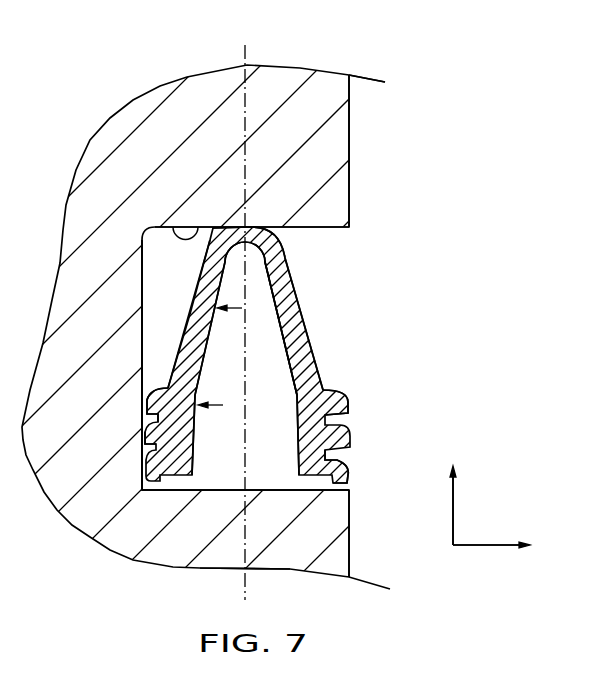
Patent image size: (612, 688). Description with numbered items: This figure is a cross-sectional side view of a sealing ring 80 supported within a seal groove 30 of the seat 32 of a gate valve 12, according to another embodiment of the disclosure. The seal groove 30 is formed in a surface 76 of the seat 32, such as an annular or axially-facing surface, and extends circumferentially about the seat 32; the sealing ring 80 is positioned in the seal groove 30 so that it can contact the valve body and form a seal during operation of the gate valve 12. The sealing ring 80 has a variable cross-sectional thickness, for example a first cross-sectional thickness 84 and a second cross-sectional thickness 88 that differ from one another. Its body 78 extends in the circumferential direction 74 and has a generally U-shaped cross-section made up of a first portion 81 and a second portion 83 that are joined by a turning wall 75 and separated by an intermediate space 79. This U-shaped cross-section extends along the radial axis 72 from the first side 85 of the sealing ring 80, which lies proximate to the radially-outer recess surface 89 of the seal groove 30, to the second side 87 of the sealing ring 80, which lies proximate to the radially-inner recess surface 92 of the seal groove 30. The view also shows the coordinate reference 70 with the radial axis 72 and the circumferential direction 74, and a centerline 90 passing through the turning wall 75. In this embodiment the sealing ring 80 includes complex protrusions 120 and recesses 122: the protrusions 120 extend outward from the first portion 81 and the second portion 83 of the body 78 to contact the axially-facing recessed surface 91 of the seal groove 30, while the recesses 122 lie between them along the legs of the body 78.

The gate valve 12 is at (357, 53).
The seat 32 is at (342, 87).
The surface 76 is at (351, 133).
The second side 87 is at (270, 209).
The central axis 90 is at (244, 62).
The radially-inner recess surface 92 is at (199, 226).
The turning wall 75 is at (222, 236).
The seal groove 30 is at (334, 247).
The sealing ring 80 is at (361, 281).
The second cross-sectional thickness 88 is at (184, 299).
The first portion 81 is at (182, 343).
The second portion 83 is at (297, 317).
The body 78 is at (306, 346).
The axially-facing recessed surface 91 is at (145, 352).
The first cross-sectional thickness 84 is at (134, 403).
The protrusions 120 is at (340, 407).
The recesses 122 is at (332, 453).
The intermediate space 79 is at (240, 451).
The radially-outer recess surface 89 is at (236, 489).
The first side 85 is at (307, 498).
The coordinate system 70 is at (503, 520).
The radial axis 72 is at (455, 512).
The circumferential direction 74 is at (485, 524).